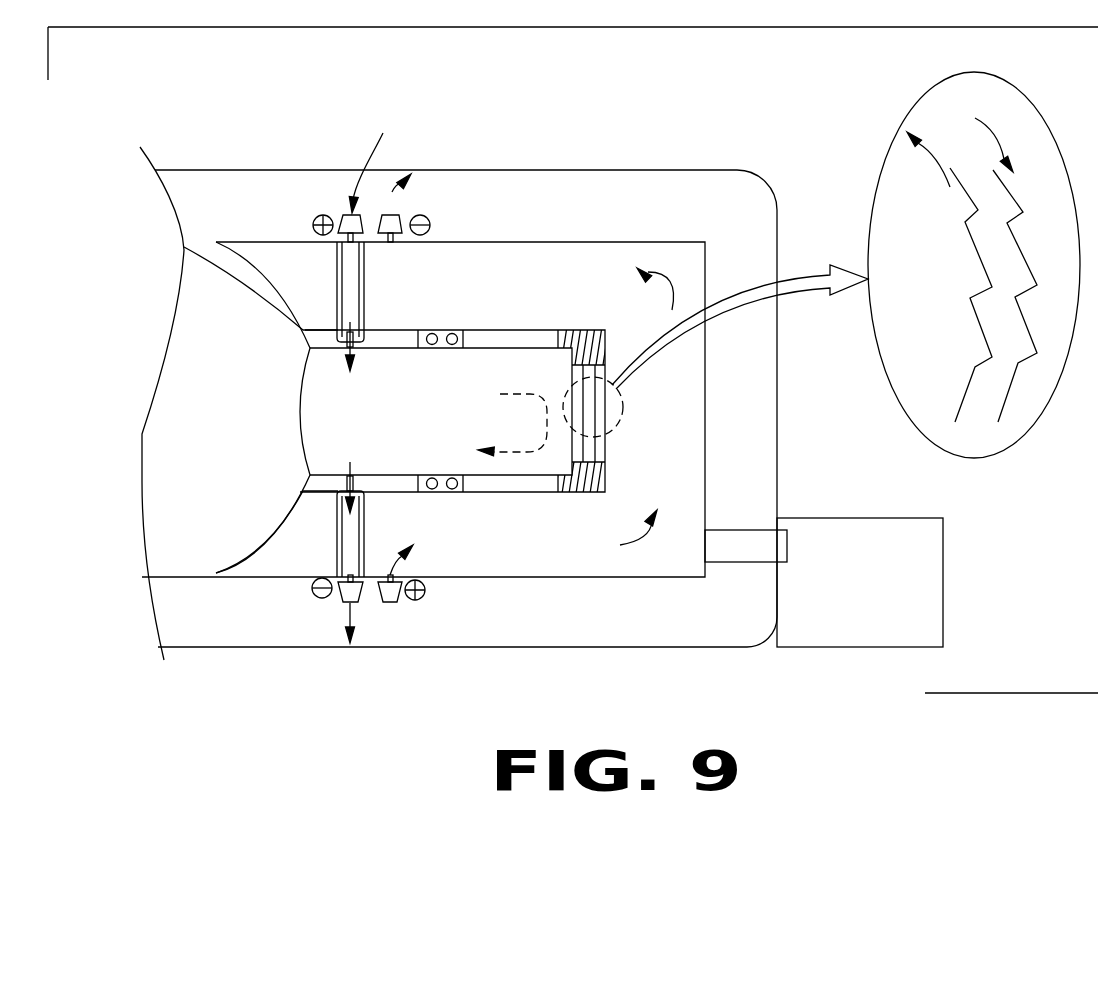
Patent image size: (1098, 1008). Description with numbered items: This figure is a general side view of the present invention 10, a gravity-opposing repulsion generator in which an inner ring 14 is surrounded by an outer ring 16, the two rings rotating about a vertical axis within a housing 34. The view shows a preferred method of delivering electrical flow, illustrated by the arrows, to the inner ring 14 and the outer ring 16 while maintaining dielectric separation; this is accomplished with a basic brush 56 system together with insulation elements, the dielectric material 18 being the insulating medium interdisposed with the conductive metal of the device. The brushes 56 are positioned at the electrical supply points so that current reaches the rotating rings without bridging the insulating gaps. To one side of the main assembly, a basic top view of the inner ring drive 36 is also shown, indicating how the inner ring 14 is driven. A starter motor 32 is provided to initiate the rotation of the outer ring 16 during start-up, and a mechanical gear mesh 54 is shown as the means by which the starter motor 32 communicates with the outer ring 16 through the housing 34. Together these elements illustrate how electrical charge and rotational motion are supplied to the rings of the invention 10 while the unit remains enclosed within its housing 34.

The present invention 10 is at (618, 145).
The inner ring 14 is at (498, 478).
The outer ring 16 is at (503, 578).
The dielectric material 18 is at (360, 290).
The starter motor 32 is at (838, 592).
The housing 34 is at (575, 647).
The inner ring drive 36 is at (900, 402).
The mechanical gear mesh 54 is at (735, 563).
The brush 56 is at (363, 217).